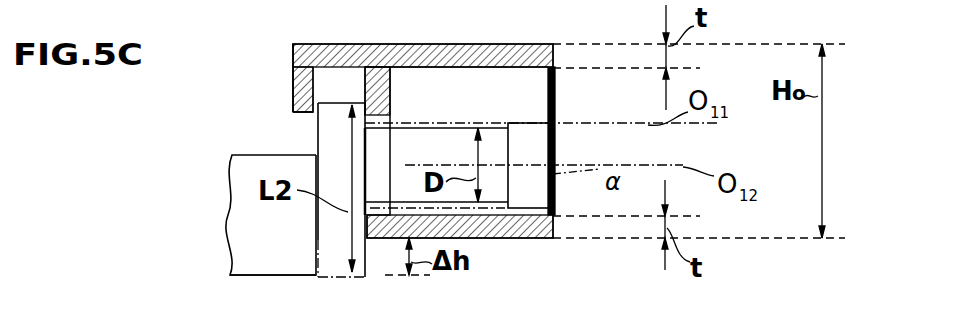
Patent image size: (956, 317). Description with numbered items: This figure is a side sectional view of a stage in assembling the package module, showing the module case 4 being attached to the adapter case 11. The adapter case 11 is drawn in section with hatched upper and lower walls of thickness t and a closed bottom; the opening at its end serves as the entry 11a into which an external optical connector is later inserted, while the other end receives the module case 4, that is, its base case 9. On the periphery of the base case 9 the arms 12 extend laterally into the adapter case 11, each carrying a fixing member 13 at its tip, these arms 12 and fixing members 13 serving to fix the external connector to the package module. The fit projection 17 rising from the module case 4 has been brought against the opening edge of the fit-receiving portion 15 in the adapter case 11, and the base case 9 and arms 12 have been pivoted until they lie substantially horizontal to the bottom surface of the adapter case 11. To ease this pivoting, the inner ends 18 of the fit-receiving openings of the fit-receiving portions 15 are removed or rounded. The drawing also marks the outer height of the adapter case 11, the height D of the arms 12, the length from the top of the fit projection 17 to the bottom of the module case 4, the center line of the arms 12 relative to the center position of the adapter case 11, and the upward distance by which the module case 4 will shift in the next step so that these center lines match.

The module case 4 is at (250, 235).
The base case 9 is at (281, 276).
The adapter case 11 is at (485, 44).
The entry 11a is at (553, 71).
The arms 12 is at (421, 150).
The fixing members 13 is at (519, 142).
The fit-receiving portion 15 is at (293, 77).
The fit projection 17 is at (317, 143).
The inner ends 18 is at (297, 116).